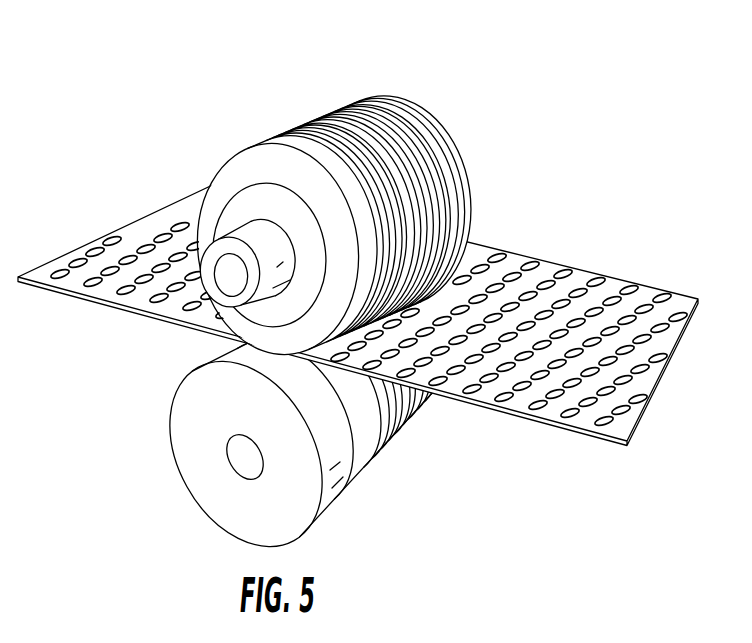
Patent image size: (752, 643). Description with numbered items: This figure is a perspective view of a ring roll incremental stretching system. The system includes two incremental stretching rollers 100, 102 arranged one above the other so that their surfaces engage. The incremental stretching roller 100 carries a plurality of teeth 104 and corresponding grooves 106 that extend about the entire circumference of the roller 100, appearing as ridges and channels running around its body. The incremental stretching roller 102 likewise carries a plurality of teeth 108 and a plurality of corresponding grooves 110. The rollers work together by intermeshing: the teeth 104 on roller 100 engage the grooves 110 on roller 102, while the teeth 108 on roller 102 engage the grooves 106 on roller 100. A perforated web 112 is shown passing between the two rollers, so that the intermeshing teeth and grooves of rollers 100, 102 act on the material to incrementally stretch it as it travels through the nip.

The incremental stretching roller 100 is at (327, 204).
The incremental stretching roller 102 is at (286, 425).
The teeth 104 is at (452, 130).
The grooves 106 is at (425, 102).
The teeth 108 is at (410, 412).
The grooves 110 is at (378, 436).
The perforated web 112 is at (358, 313).